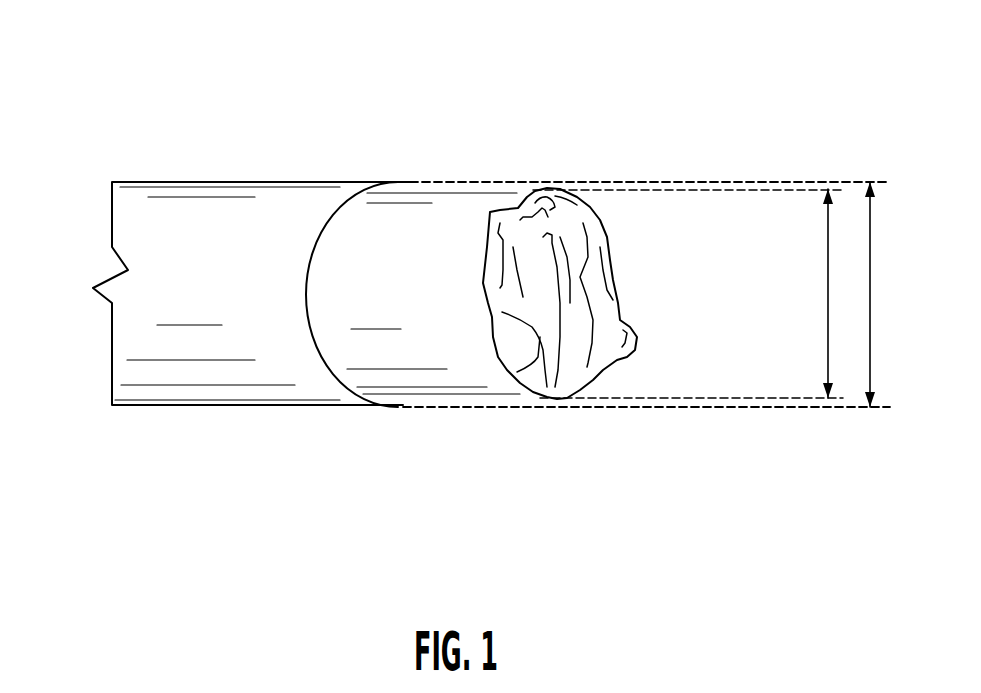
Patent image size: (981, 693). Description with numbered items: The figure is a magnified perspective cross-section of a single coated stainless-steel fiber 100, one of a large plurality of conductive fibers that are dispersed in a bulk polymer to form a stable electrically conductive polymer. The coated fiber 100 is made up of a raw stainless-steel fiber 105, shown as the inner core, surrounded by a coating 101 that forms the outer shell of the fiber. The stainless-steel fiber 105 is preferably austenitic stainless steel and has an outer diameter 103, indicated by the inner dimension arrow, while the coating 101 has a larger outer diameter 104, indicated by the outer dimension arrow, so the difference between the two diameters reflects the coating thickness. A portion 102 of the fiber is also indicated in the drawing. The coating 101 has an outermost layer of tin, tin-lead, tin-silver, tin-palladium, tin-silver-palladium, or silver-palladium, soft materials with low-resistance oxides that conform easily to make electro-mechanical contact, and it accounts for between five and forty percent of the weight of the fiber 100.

The coated stainless-steel fiber 100 is at (74, 154).
The coating 101 is at (174, 235).
The tube end portion 102 is at (453, 230).
The outer diameter of the stainless-steel fiber 103 is at (828, 240).
The outer diameter of the coating 104 is at (870, 293).
The stainless-steel fiber 105 is at (553, 298).